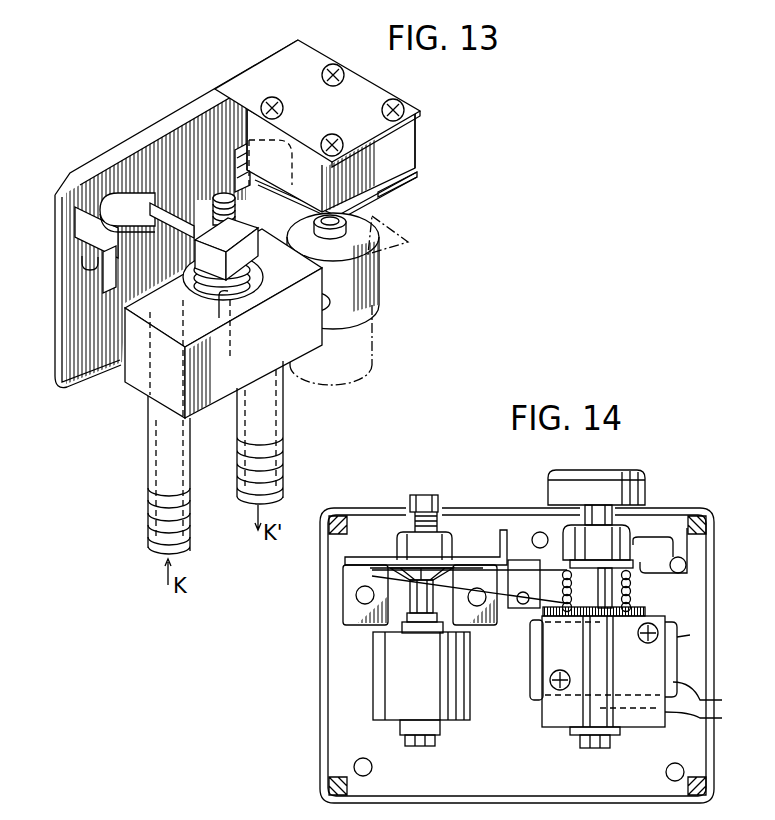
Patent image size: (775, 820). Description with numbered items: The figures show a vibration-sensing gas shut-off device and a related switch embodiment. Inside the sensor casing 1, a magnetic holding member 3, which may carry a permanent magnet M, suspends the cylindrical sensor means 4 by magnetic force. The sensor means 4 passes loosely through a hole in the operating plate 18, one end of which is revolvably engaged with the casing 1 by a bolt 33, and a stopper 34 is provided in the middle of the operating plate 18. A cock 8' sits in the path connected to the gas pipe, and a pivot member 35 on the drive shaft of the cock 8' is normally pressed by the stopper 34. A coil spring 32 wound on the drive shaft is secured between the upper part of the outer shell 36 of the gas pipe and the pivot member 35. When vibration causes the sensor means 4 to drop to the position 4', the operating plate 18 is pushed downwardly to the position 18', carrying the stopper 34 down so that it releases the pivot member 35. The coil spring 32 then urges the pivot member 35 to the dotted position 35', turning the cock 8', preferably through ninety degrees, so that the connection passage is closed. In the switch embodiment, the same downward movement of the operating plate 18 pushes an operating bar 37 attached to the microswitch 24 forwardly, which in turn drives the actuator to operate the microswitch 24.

In FIG. 13, the casing 1 is at (55, 233).
In FIG. 14, the casing 1 is at (715, 613).
In FIG. 13, the holding member 3 is at (418, 138).
In FIG. 13, the sensor means 4 is at (347, 271).
In FIG. 14, the sensor means 4 is at (405, 684).
In FIG. 13, the dropped position of sensor means 4' is at (344, 345).
In FIG. 13, the cock 8' is at (190, 359).
In FIG. 13, the operating plate 18 is at (324, 176).
In FIG. 14, the operating plate 18 is at (455, 574).
In FIG. 13, the depressed position of operating plate 18' is at (416, 235).
In FIG. 14, the microswitch 24 is at (528, 688).
In FIG. 13, the coil spring 32 is at (195, 292).
In FIG. 13, the bolt 33 is at (85, 267).
In FIG. 14, the bolt 33 is at (687, 567).
In FIG. 13, the stopper 34 is at (185, 208).
In FIG. 13, the pivot member 35 is at (102, 180).
In FIG. 13, the released position of pivot member 35' is at (295, 144).
In FIG. 13, the outer shell 36 is at (140, 383).
In FIG. 14, the operating bar 37 is at (516, 612).
In FIG. 14, the permanent magnet M is at (408, 538).